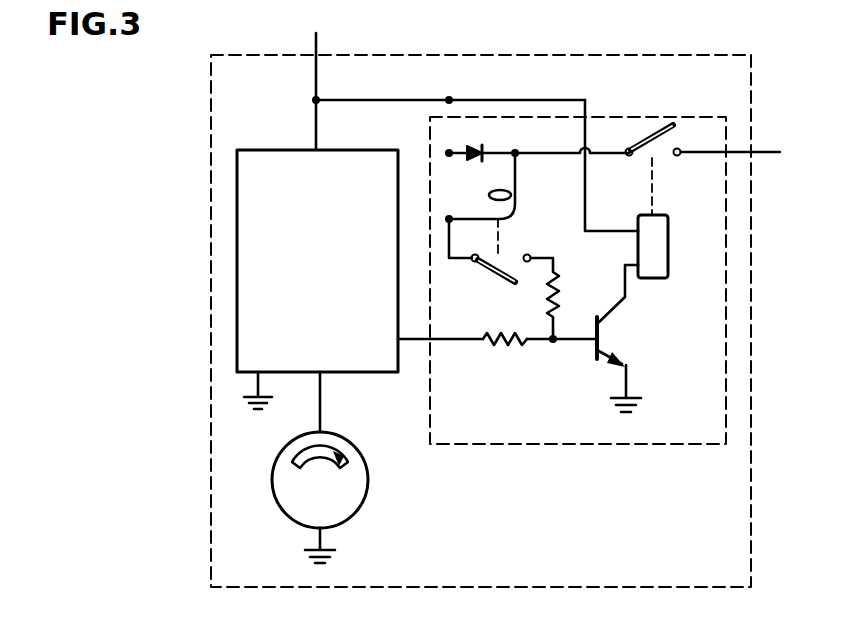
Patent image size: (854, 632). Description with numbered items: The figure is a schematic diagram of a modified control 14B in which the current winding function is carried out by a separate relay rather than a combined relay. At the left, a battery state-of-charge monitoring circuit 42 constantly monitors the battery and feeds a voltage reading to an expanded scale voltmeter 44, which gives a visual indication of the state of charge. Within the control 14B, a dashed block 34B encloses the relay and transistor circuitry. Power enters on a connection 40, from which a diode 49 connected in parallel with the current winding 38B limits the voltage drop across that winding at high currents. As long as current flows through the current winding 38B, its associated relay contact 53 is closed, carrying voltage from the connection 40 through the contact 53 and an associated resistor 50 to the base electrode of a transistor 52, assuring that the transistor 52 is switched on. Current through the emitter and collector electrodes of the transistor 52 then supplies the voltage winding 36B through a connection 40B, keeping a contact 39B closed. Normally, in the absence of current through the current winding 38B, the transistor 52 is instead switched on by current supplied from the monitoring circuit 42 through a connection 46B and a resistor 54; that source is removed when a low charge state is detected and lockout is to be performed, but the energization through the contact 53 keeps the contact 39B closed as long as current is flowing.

The control 14B is at (388, 55).
The control circuit 34B is at (531, 444).
The connection 40 is at (361, 100).
The connection 40B is at (575, 100).
The battery state-of-charge monitoring circuit 42 is at (283, 150).
The expanded scale voltmeter 44 is at (368, 480).
The connection 46B is at (452, 339).
The diode 49 is at (478, 150).
The current winding 38B is at (515, 200).
The contact 39B is at (660, 131).
The voltage winding 36B is at (656, 215).
The contact 53 is at (497, 281).
The resistor 50 is at (600, 274).
The resistor 54 is at (505, 333).
The transistor 52 is at (585, 353).